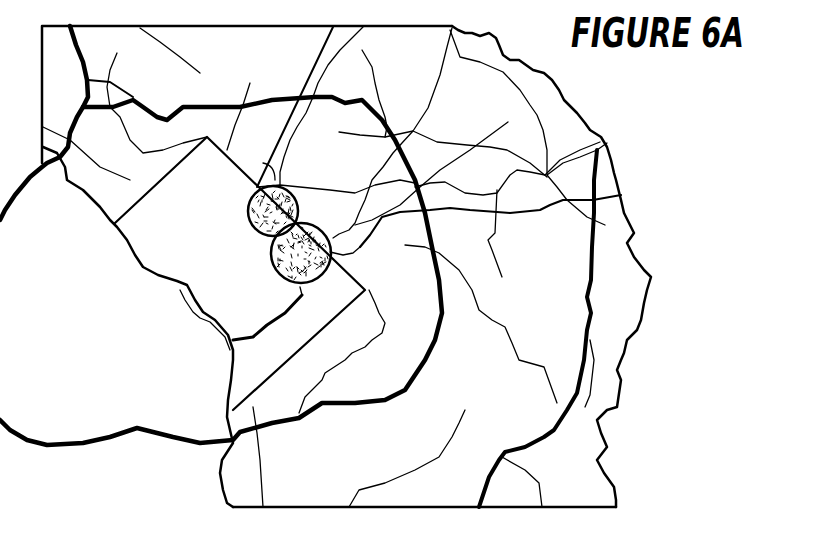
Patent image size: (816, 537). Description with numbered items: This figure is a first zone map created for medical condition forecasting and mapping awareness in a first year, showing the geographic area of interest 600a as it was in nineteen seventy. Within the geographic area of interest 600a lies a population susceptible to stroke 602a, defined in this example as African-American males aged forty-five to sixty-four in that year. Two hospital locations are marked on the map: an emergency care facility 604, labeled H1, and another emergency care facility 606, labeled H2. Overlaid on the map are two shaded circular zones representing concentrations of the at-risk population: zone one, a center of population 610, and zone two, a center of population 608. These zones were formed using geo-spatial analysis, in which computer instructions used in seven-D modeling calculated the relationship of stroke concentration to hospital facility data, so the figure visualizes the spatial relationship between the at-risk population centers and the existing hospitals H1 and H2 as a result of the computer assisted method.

The geographic area of interest 600a is at (611, 451).
The population susceptible to stroke 602a is at (57, 447).
The emergency care facility location 604 is at (300, 186).
The emergency care facility location 606 is at (357, 250).
The zone 2 center of population 608 is at (272, 252).
The zone 1 center of population 610 is at (247, 212).